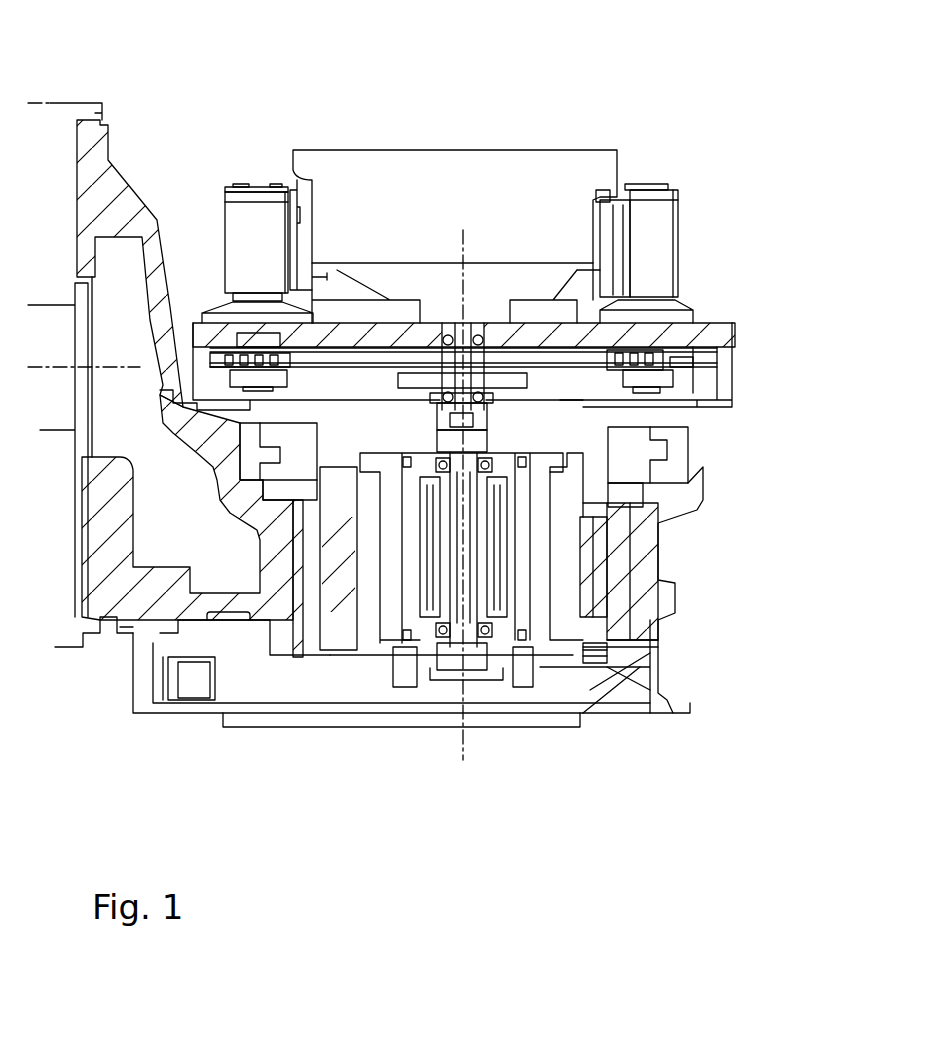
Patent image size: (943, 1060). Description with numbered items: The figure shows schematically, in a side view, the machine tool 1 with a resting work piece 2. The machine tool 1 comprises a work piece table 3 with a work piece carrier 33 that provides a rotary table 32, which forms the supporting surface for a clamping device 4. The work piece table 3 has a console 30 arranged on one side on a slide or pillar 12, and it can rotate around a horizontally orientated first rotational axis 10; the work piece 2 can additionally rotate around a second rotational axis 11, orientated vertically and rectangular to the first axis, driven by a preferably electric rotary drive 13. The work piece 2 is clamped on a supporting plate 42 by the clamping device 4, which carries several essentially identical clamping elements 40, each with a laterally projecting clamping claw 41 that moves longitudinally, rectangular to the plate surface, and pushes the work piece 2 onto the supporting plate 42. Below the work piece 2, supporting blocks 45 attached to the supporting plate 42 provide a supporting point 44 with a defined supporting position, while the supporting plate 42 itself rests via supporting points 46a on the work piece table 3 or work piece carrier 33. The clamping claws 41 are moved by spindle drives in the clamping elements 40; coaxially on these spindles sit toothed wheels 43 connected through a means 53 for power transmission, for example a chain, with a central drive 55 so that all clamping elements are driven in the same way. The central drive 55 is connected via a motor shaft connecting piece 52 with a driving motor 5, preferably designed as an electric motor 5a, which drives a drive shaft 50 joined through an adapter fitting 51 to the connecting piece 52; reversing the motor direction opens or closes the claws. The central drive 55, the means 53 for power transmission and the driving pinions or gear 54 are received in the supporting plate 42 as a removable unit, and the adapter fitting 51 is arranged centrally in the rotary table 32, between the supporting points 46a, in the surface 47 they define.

The machine tool 1 is at (175, 168).
The work piece 2 is at (550, 170).
The work piece table 3 is at (673, 513).
The clamping device 4 is at (648, 170).
The driving motor 5 is at (473, 403).
The electric motor 5a is at (540, 575).
The first rotational axis 10 is at (120, 362).
The second rotational axis 11 is at (465, 752).
The pillar 12 is at (48, 106).
The rotary drive 13 is at (340, 665).
The console 30 is at (147, 627).
The rotary table 32 is at (630, 412).
The work piece carrier 33 is at (240, 400).
The clamping element 40 is at (670, 220).
The clamping claw 41 is at (598, 205).
The supporting plate 42 is at (693, 330).
The toothed wheel 43 is at (257, 353).
The supporting point 44 is at (368, 318).
The supporting block 45 is at (400, 300).
The supporting point 46a is at (215, 440).
The surface 47 is at (540, 400).
The drive shaft 50 is at (457, 603).
The adapter fitting 51 is at (377, 407).
The motor shaft connecting piece 52 is at (398, 377).
The means for power transmission 53 is at (324, 263).
The gear 54 is at (496, 626).
The central drive 55 is at (557, 400).